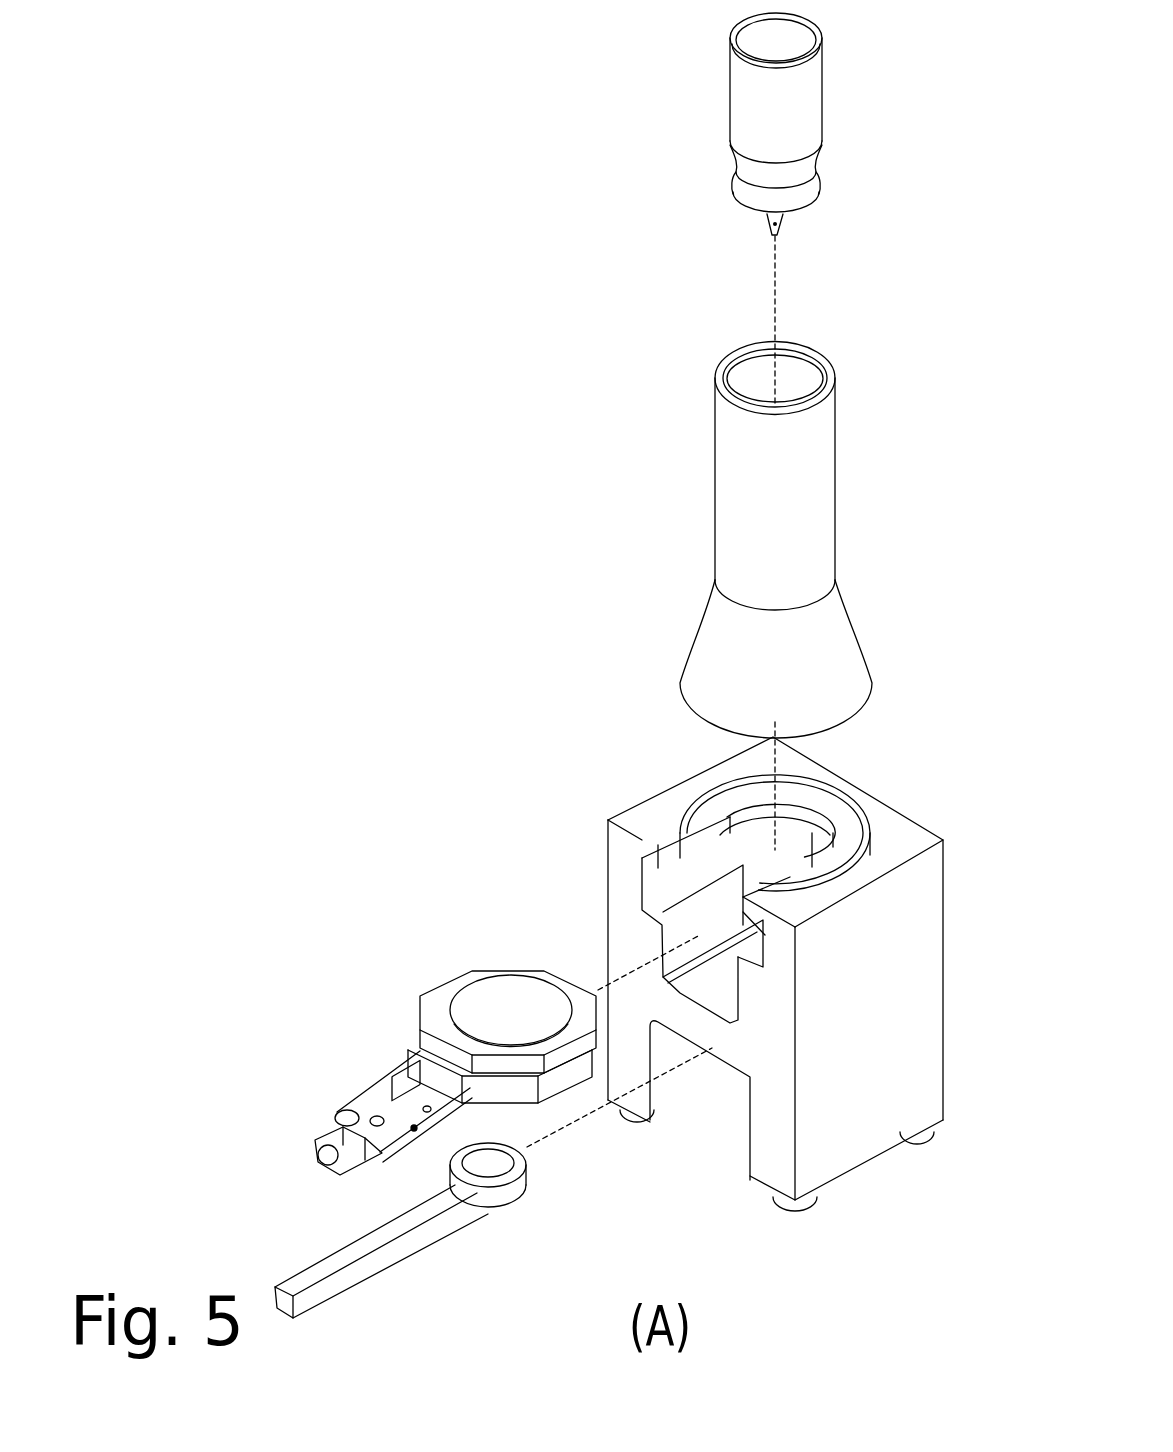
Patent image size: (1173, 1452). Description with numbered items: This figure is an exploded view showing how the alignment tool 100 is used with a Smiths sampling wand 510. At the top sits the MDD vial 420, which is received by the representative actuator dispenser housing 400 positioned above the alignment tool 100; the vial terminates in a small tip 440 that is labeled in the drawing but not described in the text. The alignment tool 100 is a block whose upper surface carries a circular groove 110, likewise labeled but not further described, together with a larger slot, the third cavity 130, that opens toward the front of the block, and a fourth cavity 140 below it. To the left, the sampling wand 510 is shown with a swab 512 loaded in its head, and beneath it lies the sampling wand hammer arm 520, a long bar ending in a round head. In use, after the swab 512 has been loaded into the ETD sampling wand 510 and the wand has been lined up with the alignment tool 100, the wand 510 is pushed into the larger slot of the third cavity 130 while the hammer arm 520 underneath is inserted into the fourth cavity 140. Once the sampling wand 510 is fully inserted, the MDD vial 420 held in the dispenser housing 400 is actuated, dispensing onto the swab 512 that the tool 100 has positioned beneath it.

The alignment tool 100 is at (840, 1143).
The annular groove 110 is at (716, 800).
The third cavity 130 is at (763, 834).
The fourth cavity 140 is at (703, 1119).
The actuator dispenser housing 400 is at (850, 570).
The MDD vial 420 is at (802, 113).
The nozzle tip 440 is at (778, 225).
The sampling wand 510 is at (413, 1080).
The swab 512 is at (488, 1007).
The hammer arm 520 is at (420, 1233).